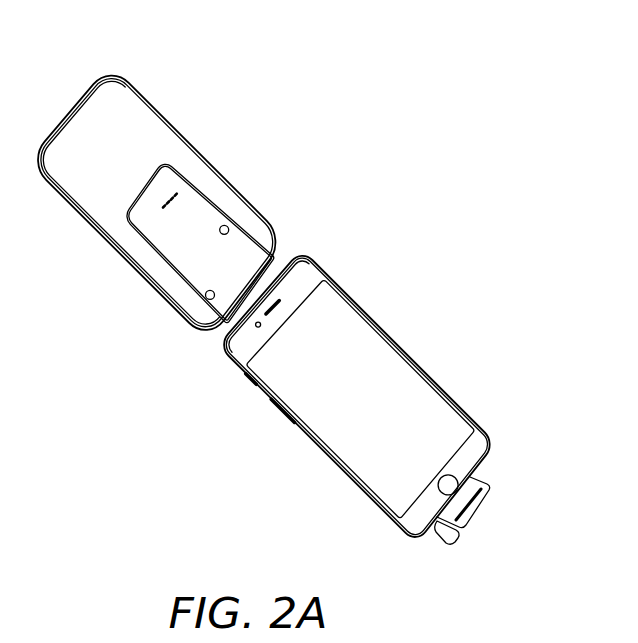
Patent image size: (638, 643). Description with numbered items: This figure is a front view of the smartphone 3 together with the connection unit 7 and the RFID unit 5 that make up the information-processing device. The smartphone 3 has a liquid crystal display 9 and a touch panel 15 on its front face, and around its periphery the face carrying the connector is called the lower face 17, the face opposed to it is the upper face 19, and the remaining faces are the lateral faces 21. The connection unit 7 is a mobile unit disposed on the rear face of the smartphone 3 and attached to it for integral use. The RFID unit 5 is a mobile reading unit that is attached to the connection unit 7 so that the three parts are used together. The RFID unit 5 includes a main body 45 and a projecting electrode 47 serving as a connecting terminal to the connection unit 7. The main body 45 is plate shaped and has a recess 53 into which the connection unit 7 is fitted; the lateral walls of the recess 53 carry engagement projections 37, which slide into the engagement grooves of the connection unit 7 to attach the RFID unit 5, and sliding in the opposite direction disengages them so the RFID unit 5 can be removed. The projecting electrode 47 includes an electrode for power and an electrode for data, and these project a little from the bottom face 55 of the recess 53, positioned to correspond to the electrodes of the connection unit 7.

The smartphone 3 is at (356, 292).
The RFID unit 5 is at (164, 107).
The connection unit 7 is at (470, 533).
The liquid crystal display 9 is at (326, 424).
The touch panel 15 is at (285, 390).
The lower face 17 is at (447, 543).
The upper face 19 is at (297, 248).
The lateral faces 21 is at (344, 470).
The engagement projections 37 is at (229, 228).
The main body 45 is at (127, 113).
The projecting electrode 47 is at (165, 234).
The recess 53 is at (203, 222).
The bottom face 55 is at (197, 257).